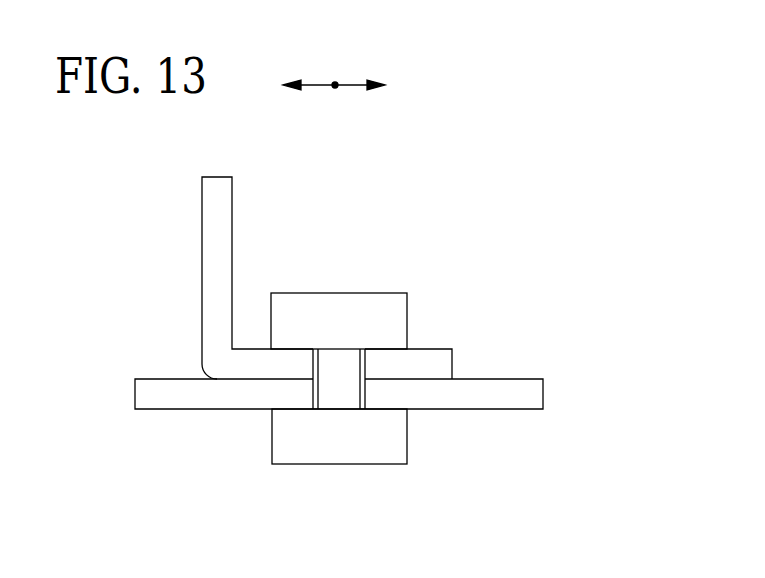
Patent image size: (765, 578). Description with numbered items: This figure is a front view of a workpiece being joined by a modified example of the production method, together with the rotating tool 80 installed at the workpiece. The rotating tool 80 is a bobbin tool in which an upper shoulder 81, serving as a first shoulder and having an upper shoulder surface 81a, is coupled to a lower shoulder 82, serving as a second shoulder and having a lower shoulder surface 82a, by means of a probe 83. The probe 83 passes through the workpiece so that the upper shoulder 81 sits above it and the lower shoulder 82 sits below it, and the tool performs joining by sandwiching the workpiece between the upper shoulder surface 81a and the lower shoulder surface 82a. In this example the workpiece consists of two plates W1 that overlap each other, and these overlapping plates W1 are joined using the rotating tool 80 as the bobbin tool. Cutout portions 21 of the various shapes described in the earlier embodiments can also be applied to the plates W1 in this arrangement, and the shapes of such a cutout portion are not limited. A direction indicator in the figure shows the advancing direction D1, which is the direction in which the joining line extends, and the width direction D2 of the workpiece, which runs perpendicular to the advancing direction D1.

The rotating tool 80 is at (407, 334).
The upper shoulder 81 is at (382, 310).
The upper shoulder surface 81a is at (288, 350).
The lower shoulder 82 is at (400, 442).
The lower shoulder surface 82a is at (295, 409).
The probe 83 is at (333, 365).
The cutout portion 21 is at (318, 390).
The plate W1 is at (440, 362).
The advancing direction D1 is at (335, 87).
The width direction D2 is at (352, 83).